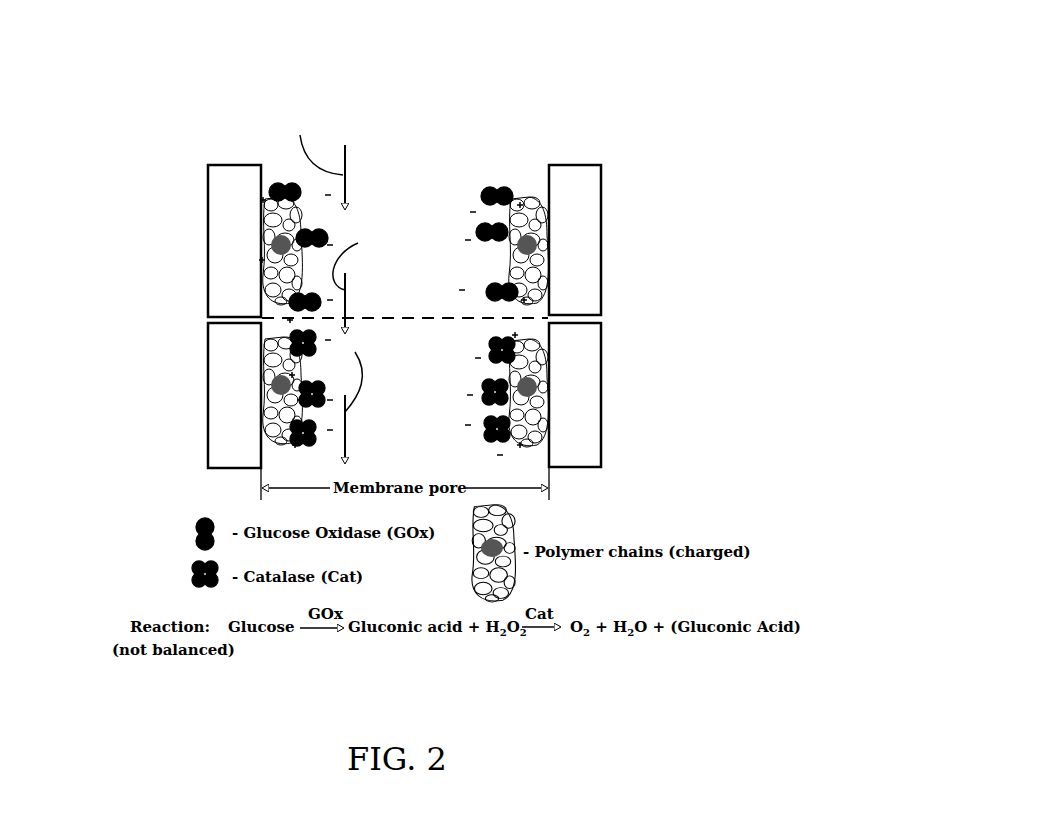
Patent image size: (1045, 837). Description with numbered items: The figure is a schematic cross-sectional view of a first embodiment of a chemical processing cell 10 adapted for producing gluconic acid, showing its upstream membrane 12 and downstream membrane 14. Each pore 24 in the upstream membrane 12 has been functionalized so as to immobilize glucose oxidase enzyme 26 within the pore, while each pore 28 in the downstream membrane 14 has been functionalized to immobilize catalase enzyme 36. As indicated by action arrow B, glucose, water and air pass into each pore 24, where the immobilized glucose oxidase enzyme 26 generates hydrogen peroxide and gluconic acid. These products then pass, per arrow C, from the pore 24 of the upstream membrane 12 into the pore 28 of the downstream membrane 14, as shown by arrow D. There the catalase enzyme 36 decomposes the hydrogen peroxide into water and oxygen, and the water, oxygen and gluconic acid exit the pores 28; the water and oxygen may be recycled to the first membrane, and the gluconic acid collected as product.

The chemical processing cell 10 is at (588, 117).
The upstream membrane 12 is at (207, 233).
The downstream membrane 14 is at (208, 405).
The pore 24 is at (445, 248).
The glucose oxidase enzyme 26 is at (290, 180).
The pore 28 is at (430, 387).
The catalase enzyme 36 is at (306, 450).